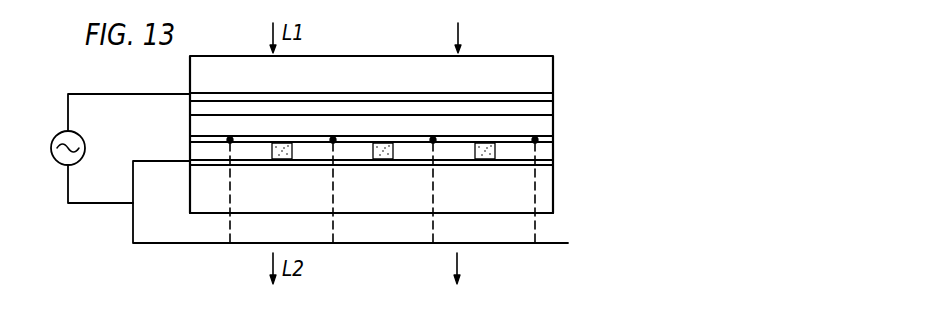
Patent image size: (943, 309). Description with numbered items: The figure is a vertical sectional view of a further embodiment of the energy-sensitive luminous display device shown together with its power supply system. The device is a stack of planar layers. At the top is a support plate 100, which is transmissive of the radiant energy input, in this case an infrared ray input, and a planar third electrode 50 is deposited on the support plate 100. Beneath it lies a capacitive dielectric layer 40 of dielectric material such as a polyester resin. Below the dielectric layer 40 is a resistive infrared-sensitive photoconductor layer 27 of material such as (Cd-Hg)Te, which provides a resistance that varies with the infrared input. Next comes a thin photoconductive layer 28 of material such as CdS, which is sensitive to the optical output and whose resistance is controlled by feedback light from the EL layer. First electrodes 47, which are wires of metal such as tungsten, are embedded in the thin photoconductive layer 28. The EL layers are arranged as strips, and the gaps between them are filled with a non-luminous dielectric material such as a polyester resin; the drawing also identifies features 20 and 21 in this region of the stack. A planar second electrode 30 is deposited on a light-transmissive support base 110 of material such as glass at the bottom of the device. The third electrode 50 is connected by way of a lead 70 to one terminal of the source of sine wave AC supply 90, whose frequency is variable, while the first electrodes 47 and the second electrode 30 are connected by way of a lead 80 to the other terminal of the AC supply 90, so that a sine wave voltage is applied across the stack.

The support plate 100 is at (553, 63).
The third electrode 50 is at (553, 93).
The capacitive dielectric layer 40 is at (547, 103).
The resistive infrared-sensitive photoconductor layer 27 is at (547, 123).
The thin photoconductive layer 28 is at (536, 141).
The first electrodes 47 is at (548, 157).
The spacer 20 is at (490, 158).
The cell gap region 21 is at (452, 155).
The second electrode 30 is at (548, 170).
The support base 110 is at (548, 198).
The lead 70 is at (138, 94).
The lead 80 is at (95, 205).
The source of sine wave AC supply 90 is at (53, 163).